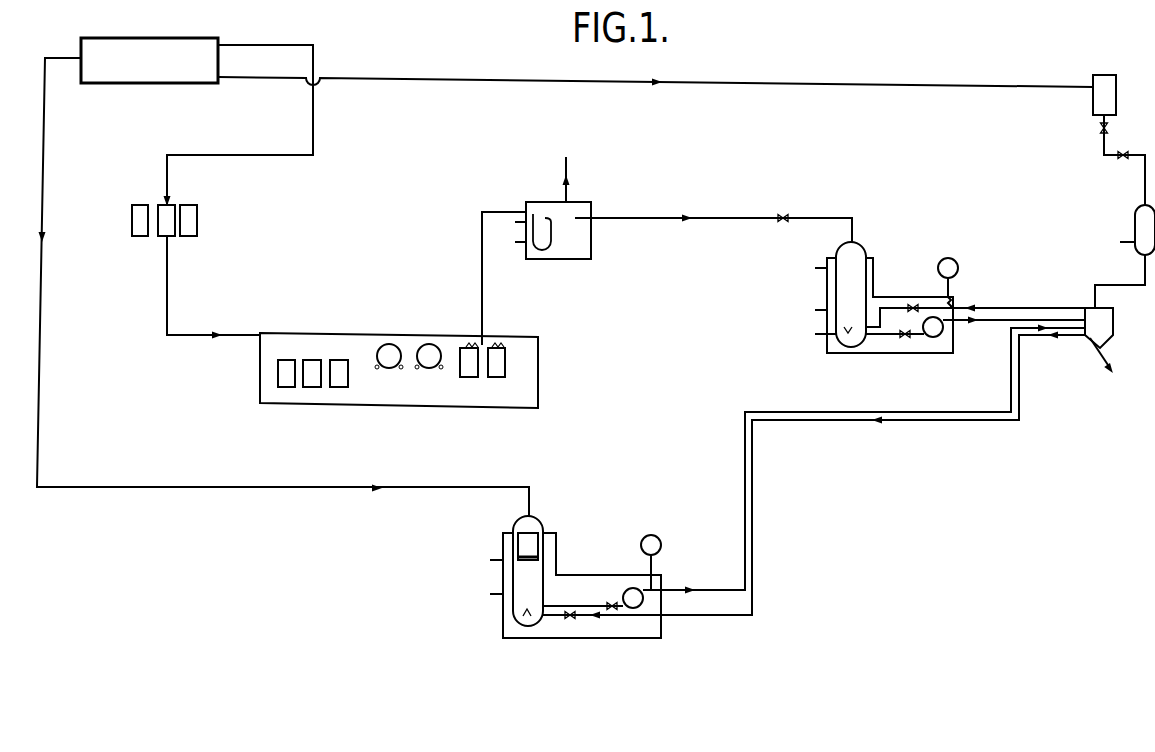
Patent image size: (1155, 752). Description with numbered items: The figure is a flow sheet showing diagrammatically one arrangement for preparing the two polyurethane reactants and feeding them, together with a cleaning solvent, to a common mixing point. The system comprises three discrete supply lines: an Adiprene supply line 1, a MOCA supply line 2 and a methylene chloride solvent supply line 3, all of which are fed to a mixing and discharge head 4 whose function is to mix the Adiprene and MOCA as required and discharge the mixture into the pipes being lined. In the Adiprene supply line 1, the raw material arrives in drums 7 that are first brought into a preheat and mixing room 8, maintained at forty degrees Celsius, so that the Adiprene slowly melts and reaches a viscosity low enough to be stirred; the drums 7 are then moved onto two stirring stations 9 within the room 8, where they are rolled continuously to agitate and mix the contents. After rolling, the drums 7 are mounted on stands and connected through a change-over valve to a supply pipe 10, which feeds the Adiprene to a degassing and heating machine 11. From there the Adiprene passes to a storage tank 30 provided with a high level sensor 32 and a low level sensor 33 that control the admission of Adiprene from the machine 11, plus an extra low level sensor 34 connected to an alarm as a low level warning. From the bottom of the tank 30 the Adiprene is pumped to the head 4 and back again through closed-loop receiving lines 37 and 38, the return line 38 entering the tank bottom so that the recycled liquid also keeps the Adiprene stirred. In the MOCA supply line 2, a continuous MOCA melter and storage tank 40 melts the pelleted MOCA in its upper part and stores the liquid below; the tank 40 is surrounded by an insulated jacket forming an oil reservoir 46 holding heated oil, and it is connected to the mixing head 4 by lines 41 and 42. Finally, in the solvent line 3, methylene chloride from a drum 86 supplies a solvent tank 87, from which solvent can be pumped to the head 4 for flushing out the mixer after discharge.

The Adiprene supply line 1 is at (474, 245).
The MOCA supply line 2 is at (342, 500).
The methylene chloride solvent supply line 3 is at (995, 81).
The mixing and discharge head 4 is at (1097, 330).
The drums 7 is at (188, 222).
The preheat and mixing room 8 is at (308, 333).
The stirring stations 9 is at (400, 345).
The supply pipe 10 is at (482, 290).
The degassing and heating machine 11 is at (538, 202).
The storage tank 30 is at (873, 242).
The high level sensor 32 is at (815, 268).
The low level sensor 33 is at (815, 310).
The extra low level sensor 34 is at (815, 334).
The receiving line 37 is at (993, 322).
The return line 38 is at (987, 306).
The MOCA melter and storage tank 40 is at (537, 569).
The line 41 is at (745, 447).
The line 42 is at (753, 512).
The oil reservoir 46 is at (592, 627).
The drum 86 is at (1102, 82).
The solvent tank 87 is at (1135, 212).